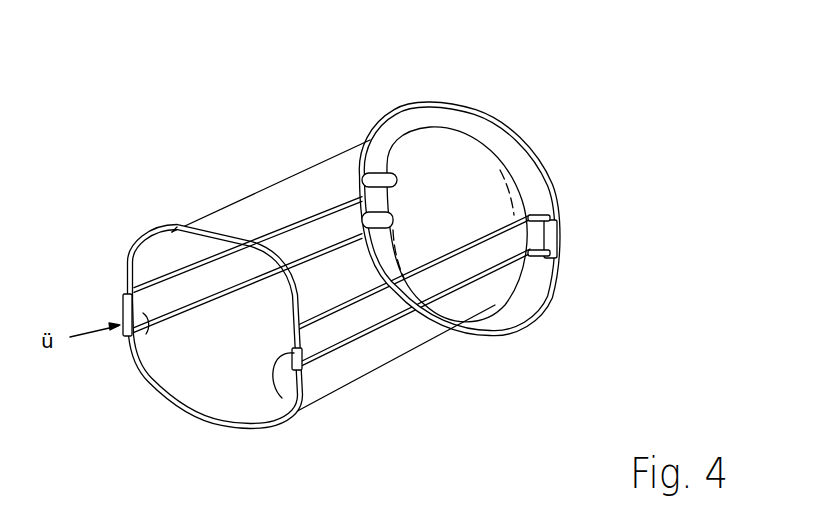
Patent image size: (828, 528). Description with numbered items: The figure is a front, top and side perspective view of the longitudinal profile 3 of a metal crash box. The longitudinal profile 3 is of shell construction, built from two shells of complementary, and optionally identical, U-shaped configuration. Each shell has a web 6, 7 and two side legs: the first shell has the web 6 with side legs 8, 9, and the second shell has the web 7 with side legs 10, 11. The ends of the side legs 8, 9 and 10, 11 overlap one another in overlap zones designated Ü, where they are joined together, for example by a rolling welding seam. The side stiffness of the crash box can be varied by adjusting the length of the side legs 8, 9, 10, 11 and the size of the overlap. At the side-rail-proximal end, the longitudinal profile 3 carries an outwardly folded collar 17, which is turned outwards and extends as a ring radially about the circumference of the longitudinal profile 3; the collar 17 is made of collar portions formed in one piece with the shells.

The longitudinal profile 3 is at (300, 118).
The web 6 is at (253, 215).
The web 7 is at (204, 424).
The side leg 8 is at (121, 313).
The side leg 9 is at (283, 399).
The side leg 10 is at (134, 350).
The side leg 11 is at (347, 357).
The collar 17 is at (505, 115).